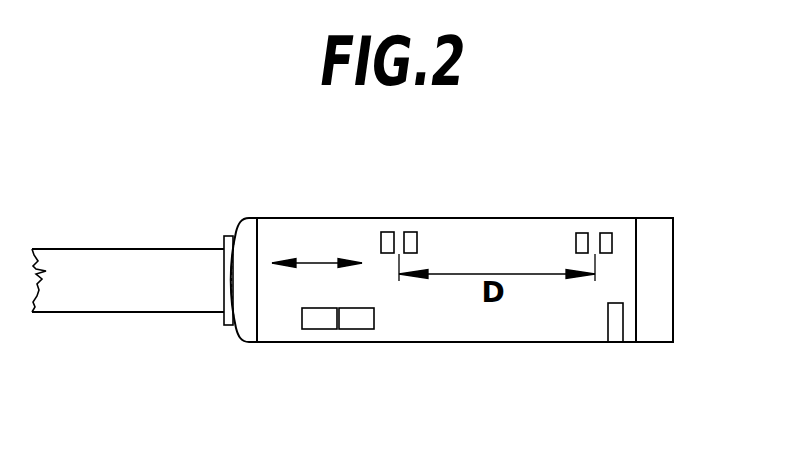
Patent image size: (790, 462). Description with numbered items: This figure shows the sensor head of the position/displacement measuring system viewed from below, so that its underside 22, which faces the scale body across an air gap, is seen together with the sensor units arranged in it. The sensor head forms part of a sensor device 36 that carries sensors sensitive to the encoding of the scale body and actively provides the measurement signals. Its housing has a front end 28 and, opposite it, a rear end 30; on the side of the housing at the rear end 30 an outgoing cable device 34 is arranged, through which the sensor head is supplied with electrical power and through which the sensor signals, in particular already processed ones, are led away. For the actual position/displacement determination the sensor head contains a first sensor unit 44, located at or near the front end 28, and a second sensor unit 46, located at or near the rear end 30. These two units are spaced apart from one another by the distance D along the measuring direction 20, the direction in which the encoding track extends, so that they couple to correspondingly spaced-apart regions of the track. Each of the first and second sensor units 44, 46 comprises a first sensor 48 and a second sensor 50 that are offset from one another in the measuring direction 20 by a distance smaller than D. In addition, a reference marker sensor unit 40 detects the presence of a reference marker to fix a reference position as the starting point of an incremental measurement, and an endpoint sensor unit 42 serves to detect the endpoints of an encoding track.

The measuring direction 20 is at (318, 260).
The underside 22 is at (421, 330).
The front end 28 is at (674, 262).
The rear end 30 is at (255, 248).
The outgoing cable device 34 is at (105, 293).
The sensor device 36 is at (510, 345).
The reference marker sensor unit 40 is at (615, 335).
The endpoint sensor unit 42 is at (318, 330).
The first sensor unit 44 is at (596, 200).
The second sensor unit 46 is at (392, 231).
The first sensor 48 is at (607, 237).
The second sensor 50 is at (582, 232).